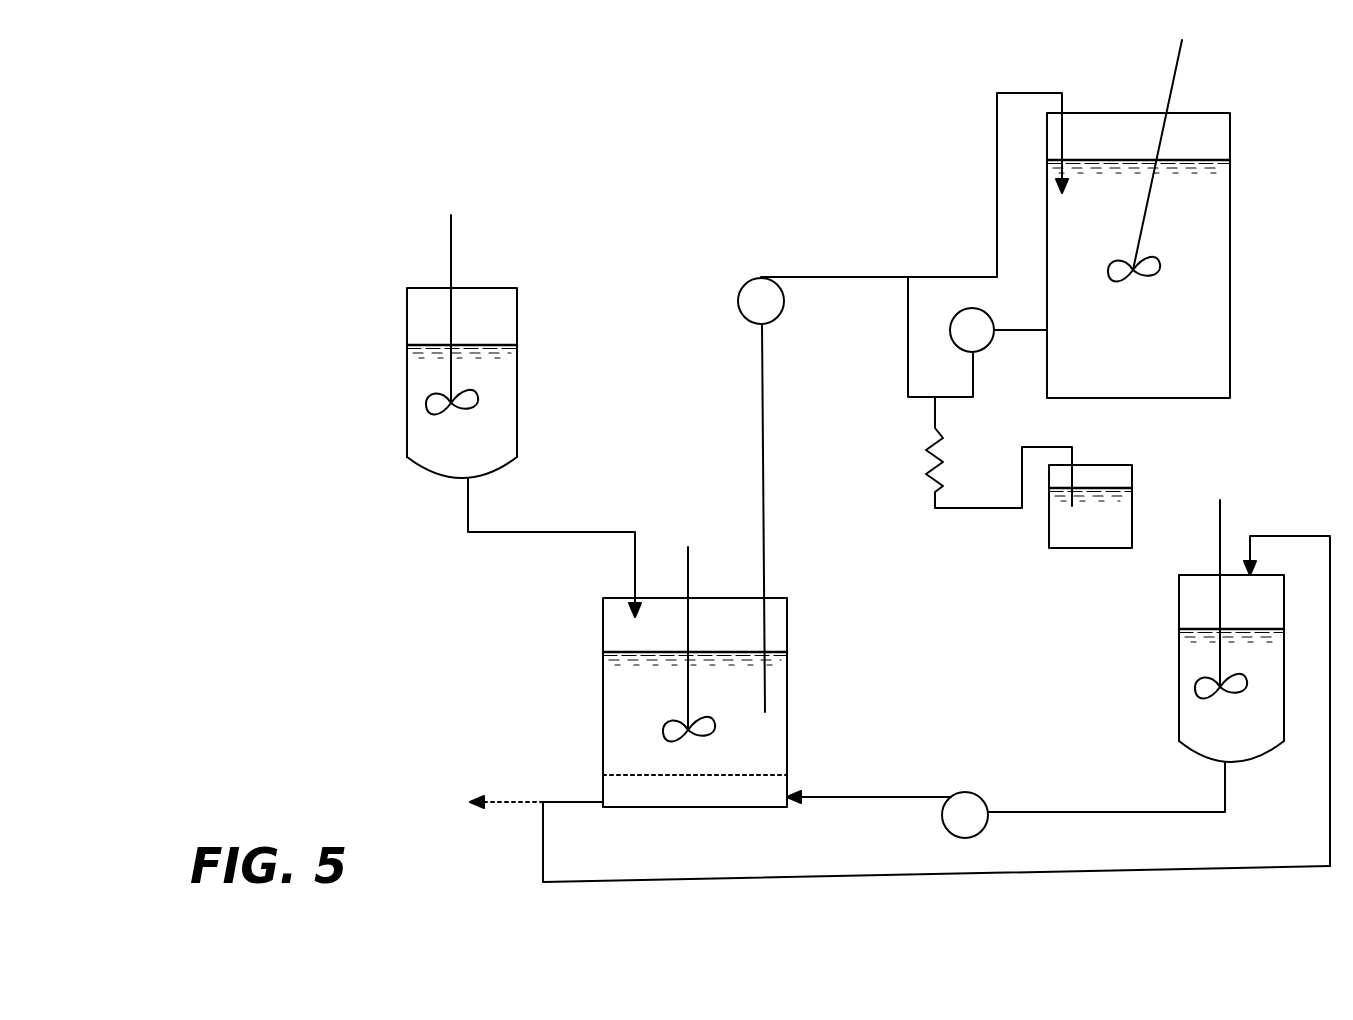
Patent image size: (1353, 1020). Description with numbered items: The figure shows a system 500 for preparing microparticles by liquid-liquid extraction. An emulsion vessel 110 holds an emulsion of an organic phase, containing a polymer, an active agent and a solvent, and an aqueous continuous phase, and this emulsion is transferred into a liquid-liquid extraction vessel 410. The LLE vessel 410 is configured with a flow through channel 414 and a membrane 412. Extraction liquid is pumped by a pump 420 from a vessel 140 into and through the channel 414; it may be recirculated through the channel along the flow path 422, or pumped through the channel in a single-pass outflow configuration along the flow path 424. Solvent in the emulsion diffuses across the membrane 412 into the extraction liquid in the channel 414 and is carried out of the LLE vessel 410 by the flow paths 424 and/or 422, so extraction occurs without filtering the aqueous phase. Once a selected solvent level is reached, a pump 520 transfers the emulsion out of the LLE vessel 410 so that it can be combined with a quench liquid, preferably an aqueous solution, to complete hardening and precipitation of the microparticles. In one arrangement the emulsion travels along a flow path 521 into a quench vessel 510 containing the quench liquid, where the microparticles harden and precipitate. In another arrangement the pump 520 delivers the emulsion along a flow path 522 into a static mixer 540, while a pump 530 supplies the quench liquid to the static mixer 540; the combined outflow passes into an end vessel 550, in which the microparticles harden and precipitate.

The system 500 is at (318, 302).
The emulsion vessel 110 is at (407, 373).
The quench vessel 510 is at (1230, 178).
The flow path 521 is at (997, 118).
The pump 520 is at (778, 308).
The flow path 522 is at (908, 350).
The pump 530 is at (972, 320).
The static mixer 540 is at (977, 441).
The end vessel 550 is at (1132, 465).
The vessel 140 is at (1198, 575).
The liquid-liquid extraction vessel 410 is at (787, 605).
The membrane 412 is at (625, 770).
The flow through channel 414 is at (788, 777).
The pump 420 is at (976, 800).
The flow path 422 is at (720, 878).
The flow path 424 is at (505, 810).